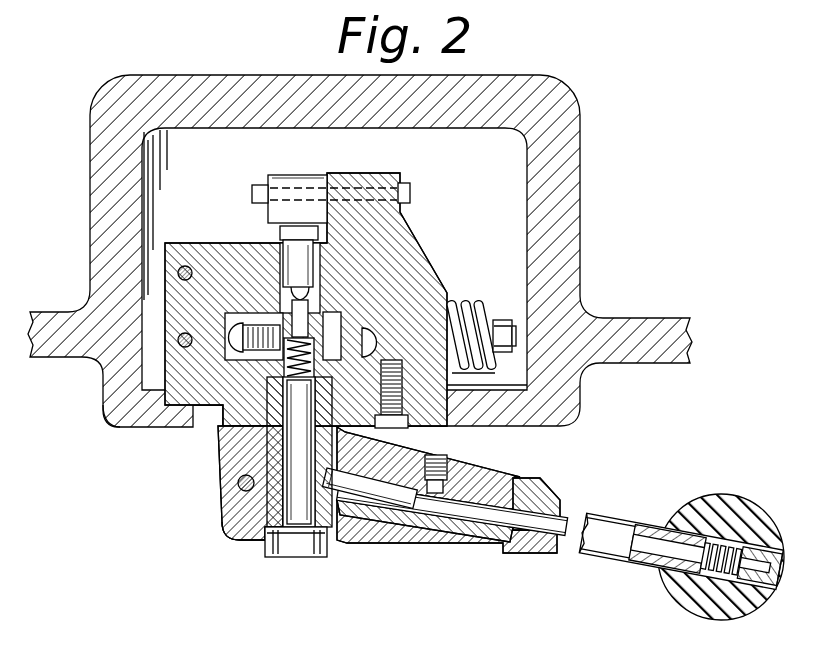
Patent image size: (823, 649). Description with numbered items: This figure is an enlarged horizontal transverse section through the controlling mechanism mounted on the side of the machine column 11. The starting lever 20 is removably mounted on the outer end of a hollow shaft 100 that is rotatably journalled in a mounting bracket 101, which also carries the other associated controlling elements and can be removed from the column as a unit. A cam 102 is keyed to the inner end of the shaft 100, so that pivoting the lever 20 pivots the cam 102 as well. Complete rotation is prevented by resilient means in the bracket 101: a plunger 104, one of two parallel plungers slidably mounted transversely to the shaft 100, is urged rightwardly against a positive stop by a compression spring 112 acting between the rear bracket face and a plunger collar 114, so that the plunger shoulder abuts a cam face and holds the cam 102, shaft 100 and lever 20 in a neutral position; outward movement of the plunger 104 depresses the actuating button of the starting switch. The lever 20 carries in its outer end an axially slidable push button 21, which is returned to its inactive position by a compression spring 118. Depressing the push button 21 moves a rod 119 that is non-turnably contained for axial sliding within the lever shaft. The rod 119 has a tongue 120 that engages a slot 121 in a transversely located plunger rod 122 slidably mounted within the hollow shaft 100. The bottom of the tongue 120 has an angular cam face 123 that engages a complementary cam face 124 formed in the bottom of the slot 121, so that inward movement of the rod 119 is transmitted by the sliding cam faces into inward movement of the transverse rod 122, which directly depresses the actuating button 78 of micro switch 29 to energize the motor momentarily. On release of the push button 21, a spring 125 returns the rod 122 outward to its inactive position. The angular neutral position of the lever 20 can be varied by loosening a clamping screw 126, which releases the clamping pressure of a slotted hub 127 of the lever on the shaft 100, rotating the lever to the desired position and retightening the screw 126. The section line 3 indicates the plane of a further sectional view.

The column 11 is at (96, 368).
The mounting bracket 101 is at (110, 418).
The section line 3 is at (90, 332).
The micro switch 29 is at (300, 174).
The actuating button 78 is at (277, 238).
The plunger rod 122 is at (272, 438).
The slot 121 is at (233, 507).
The clamping screw 126 is at (277, 477).
The slotted hub 127 is at (233, 520).
The hollow shaft 100 is at (250, 546).
The tongue 120 is at (338, 545).
The rod 119 is at (463, 512).
The lever 20 is at (535, 497).
The spring 125 is at (300, 377).
The cam face 124 is at (299, 520).
The angular cam face 123 is at (300, 533).
The cam 102 is at (367, 310).
The compression spring 112 is at (470, 303).
The plunger collar 114 is at (488, 297).
The plunger 104 is at (508, 356).
The compression spring 118 is at (684, 603).
The push button 21 is at (781, 593).